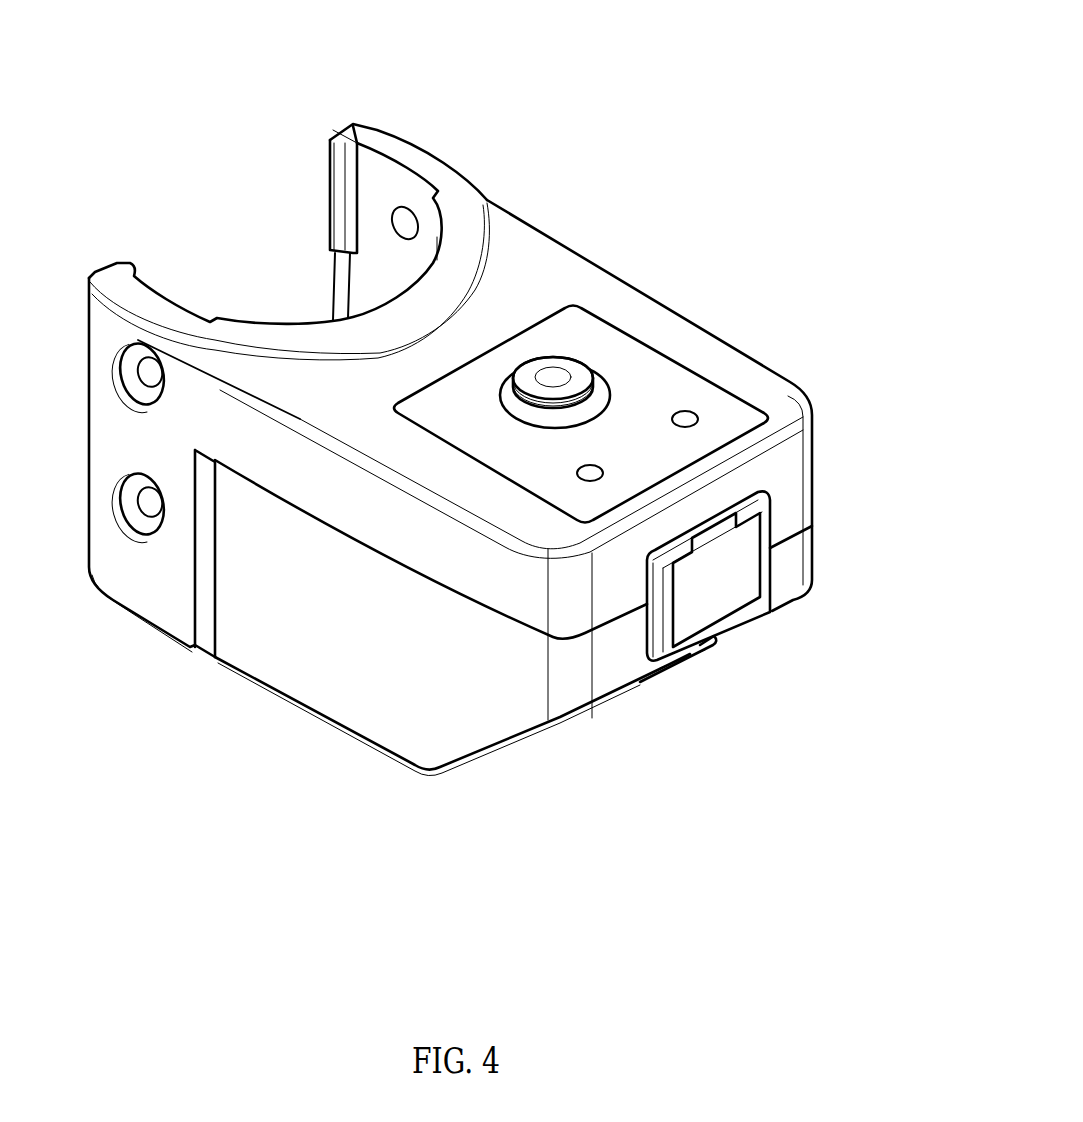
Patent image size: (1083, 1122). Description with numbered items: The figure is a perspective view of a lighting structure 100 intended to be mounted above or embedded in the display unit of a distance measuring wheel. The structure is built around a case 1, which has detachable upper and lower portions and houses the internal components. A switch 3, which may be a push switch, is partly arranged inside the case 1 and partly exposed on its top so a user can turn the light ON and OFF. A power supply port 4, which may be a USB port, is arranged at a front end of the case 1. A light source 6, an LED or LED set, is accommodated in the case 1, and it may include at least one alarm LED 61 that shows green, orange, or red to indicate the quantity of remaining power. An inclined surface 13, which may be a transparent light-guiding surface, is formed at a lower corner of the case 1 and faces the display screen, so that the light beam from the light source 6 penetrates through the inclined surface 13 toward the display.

The lighting structure 100 is at (643, 136).
The case 1 is at (635, 296).
The switch 3 is at (553, 377).
The power supply port 4 is at (713, 565).
The light source 6 is at (688, 667).
The inclined surface 13 is at (567, 722).
The alarm LED 61 is at (688, 416).